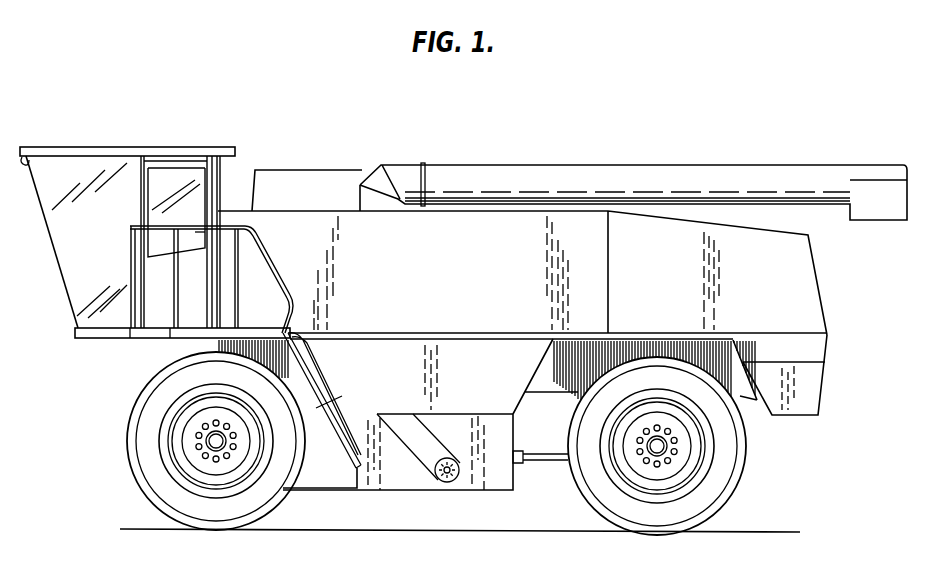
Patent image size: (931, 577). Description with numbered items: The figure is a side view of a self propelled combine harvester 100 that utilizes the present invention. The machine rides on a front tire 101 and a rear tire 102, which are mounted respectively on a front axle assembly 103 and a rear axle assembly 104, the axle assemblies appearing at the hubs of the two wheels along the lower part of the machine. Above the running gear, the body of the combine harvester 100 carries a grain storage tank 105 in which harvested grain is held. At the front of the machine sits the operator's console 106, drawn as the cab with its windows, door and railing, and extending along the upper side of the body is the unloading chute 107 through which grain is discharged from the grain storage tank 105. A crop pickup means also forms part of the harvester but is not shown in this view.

The self propelled combine harvester 100 is at (423, 287).
The front tire 101 is at (283, 494).
The rear tire 102 is at (728, 497).
The front axle assembly 103 is at (212, 442).
The rear axle assembly 104 is at (660, 447).
The grain storage tank 105 is at (595, 216).
The operator's console 106 is at (218, 178).
The unloading chute 107 is at (780, 167).